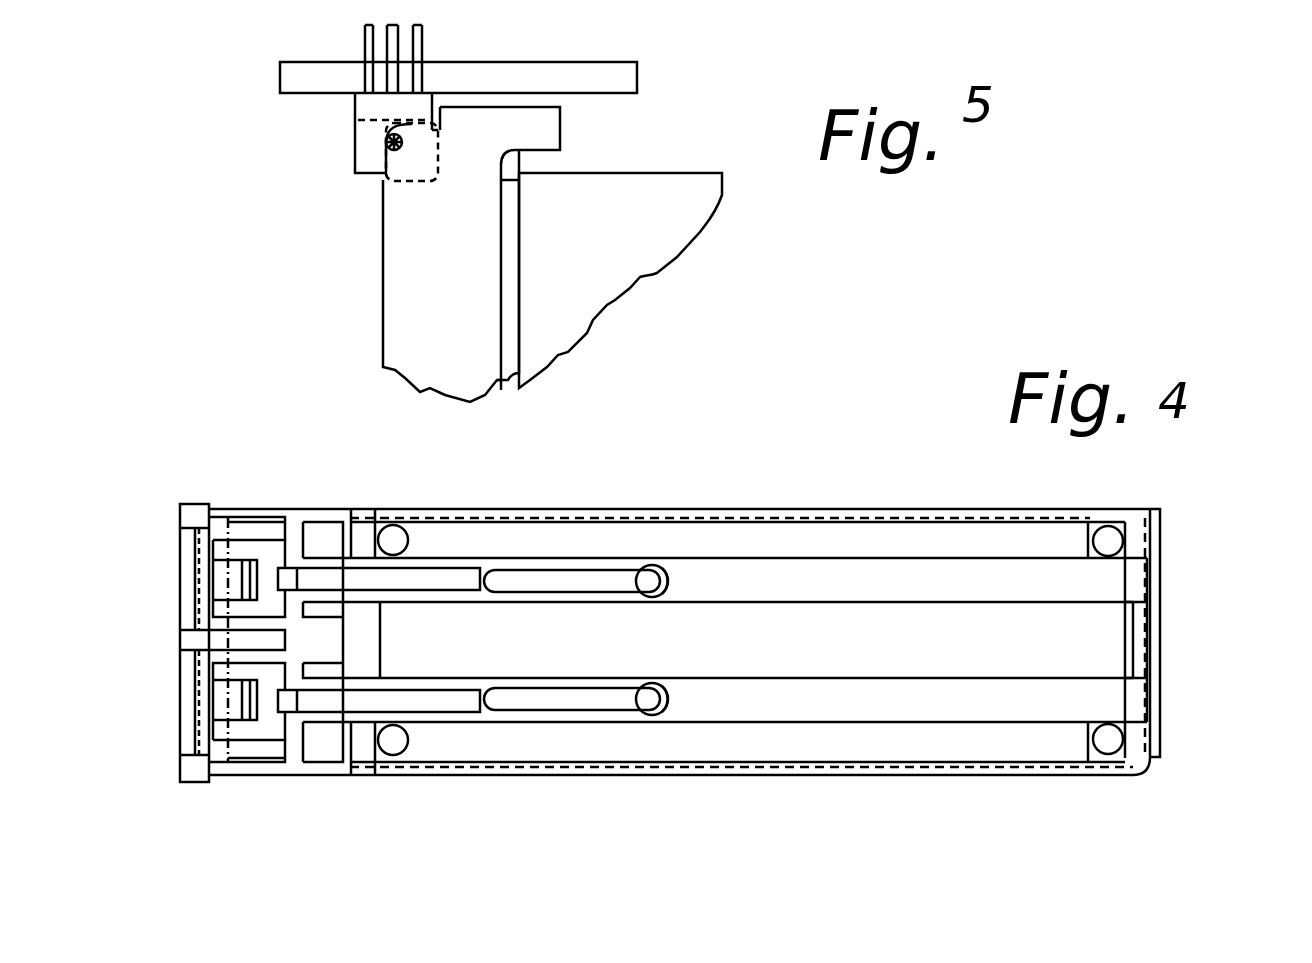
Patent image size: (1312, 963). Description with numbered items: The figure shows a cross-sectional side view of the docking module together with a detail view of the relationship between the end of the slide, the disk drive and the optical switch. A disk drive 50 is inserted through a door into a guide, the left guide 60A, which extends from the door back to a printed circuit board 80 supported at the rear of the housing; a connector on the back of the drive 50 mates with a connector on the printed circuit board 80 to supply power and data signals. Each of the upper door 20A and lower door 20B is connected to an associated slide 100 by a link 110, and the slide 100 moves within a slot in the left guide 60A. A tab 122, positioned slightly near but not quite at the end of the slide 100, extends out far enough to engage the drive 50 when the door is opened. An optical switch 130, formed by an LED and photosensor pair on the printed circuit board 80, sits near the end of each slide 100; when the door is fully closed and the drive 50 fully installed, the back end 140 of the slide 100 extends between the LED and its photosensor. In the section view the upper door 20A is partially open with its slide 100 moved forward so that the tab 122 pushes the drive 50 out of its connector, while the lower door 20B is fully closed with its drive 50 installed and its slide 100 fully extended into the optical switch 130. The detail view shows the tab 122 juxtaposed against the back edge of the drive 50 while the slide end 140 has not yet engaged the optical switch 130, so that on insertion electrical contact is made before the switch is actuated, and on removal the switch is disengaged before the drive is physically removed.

In FIG. 5, the printed circuit board 80 is at (533, 72).
In FIG. 4, the printed circuit board 80 is at (1153, 637).
In FIG. 5, the optical switch 130 is at (365, 107).
In FIG. 5, the back end of the slide 140 is at (383, 178).
In FIG. 5, the tab 122 is at (533, 134).
In FIG. 5, the disk drive 50 is at (690, 183).
In FIG. 5, the slide 100 is at (398, 305).
In FIG. 4, the slide 100 is at (900, 697).
In FIG. 4, the left guide 60A is at (586, 537).
In FIG. 4, the link 110 is at (362, 575).
In FIG. 4, the upper door 20A is at (187, 560).
In FIG. 4, the lower door 20B is at (187, 700).